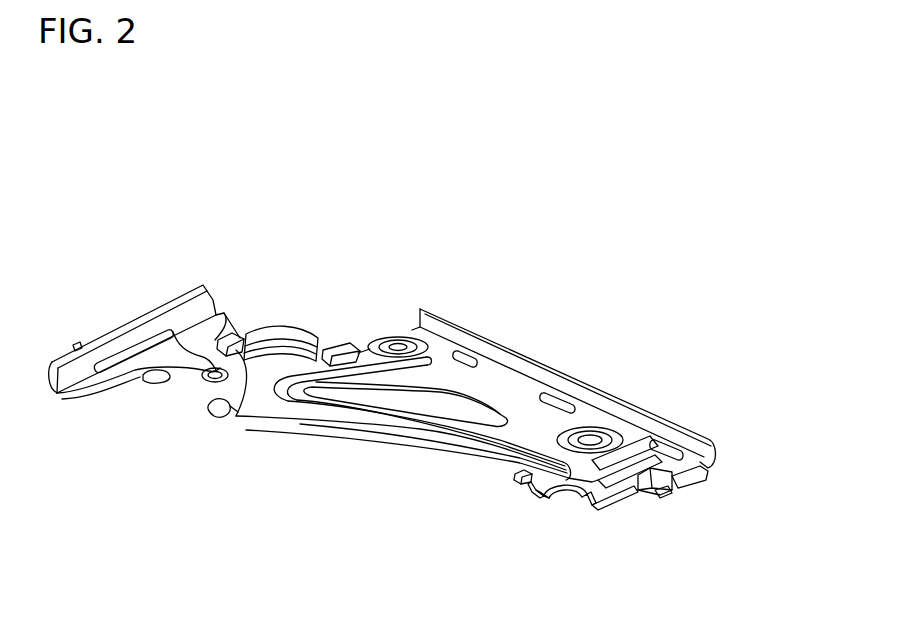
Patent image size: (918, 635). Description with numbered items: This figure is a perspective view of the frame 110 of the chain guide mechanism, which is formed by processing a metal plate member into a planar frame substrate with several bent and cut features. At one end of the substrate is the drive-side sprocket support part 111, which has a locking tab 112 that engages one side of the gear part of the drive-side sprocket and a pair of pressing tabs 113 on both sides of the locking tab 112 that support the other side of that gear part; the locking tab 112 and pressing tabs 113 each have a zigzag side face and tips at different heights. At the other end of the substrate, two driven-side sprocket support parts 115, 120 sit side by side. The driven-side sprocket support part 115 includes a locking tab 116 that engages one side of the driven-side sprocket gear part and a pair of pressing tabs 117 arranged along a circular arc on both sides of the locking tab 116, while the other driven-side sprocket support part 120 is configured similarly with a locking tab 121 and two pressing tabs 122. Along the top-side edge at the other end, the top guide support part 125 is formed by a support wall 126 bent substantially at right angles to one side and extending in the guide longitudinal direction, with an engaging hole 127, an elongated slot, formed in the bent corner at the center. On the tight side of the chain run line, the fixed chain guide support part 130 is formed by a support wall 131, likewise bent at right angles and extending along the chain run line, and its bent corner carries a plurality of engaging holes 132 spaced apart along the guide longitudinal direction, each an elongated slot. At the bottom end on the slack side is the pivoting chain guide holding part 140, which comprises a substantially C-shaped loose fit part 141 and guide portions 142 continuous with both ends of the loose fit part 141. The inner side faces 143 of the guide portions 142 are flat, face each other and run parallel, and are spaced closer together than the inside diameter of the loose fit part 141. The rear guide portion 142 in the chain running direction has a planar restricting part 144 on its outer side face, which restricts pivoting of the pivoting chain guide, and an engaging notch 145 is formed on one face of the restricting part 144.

The frame 110 is at (387, 435).
The drive-side sprocket support part 111 is at (690, 501).
The locking tab 112 is at (673, 480).
The pressing tabs 113 is at (688, 474).
The driven-side sprocket support part 115 is at (299, 281).
The locking tab 116 is at (273, 337).
The pressing tabs 117 is at (382, 227).
The driven-side sprocket support part 120 is at (137, 365).
The locking tab 121 is at (212, 376).
The pressing tabs 122 is at (217, 506).
The top guide support part 125 is at (125, 305).
The support wall 126 is at (168, 312).
The engaging hole 127 is at (127, 350).
The fixed chain guide support part 130 is at (576, 362).
The support wall 131 is at (602, 400).
The engaging holes 132 is at (585, 366).
The pivoting chain guide holding part 140 is at (519, 545).
The loose fit part 141 is at (569, 490).
The guide portions 142 is at (535, 488).
The inner side faces 143 is at (548, 494).
The restricting part 144 is at (520, 486).
The engaging notch 145 is at (477, 480).